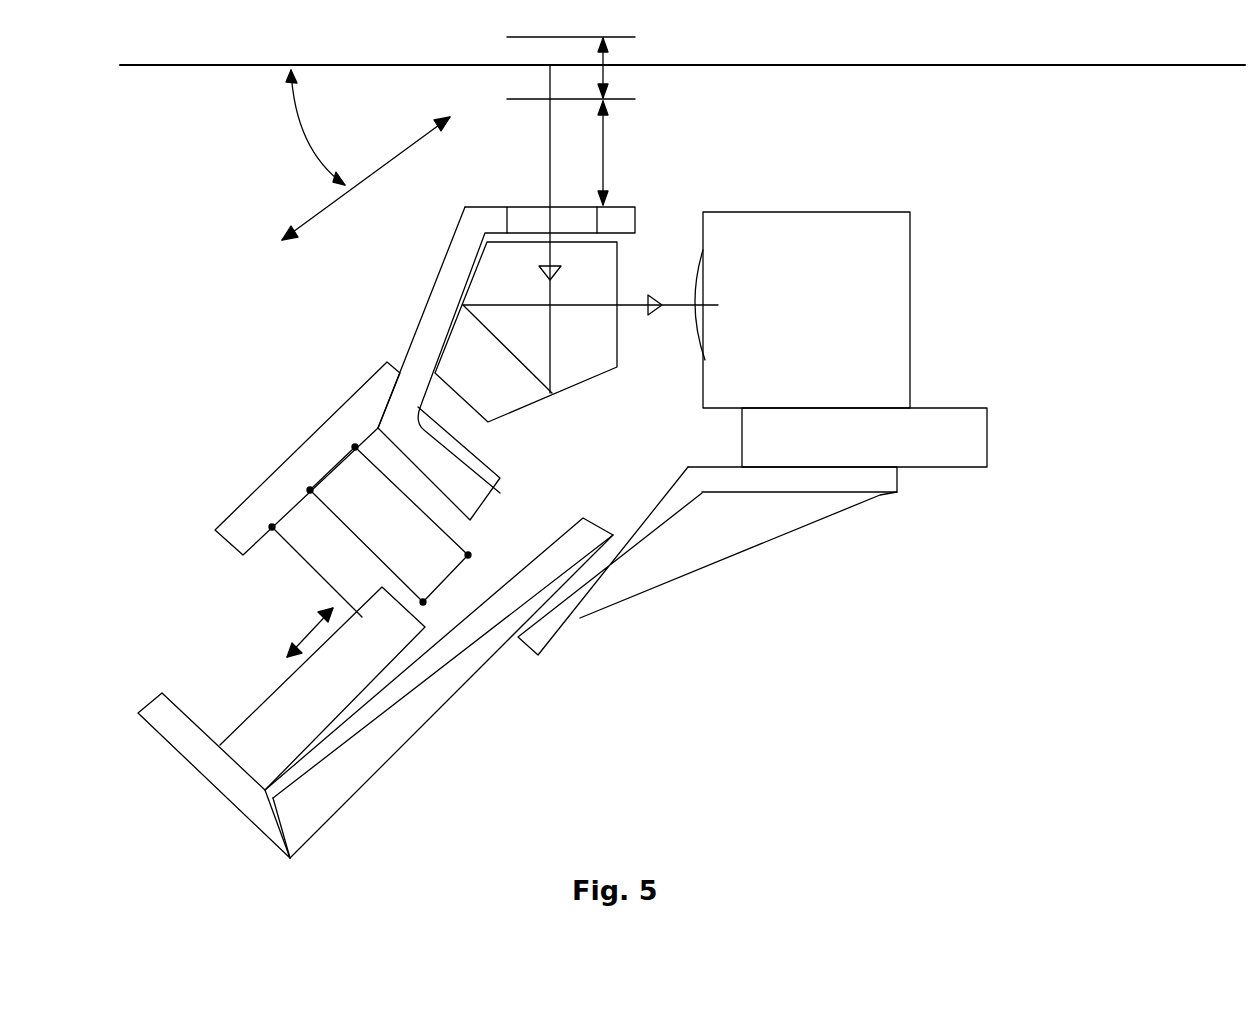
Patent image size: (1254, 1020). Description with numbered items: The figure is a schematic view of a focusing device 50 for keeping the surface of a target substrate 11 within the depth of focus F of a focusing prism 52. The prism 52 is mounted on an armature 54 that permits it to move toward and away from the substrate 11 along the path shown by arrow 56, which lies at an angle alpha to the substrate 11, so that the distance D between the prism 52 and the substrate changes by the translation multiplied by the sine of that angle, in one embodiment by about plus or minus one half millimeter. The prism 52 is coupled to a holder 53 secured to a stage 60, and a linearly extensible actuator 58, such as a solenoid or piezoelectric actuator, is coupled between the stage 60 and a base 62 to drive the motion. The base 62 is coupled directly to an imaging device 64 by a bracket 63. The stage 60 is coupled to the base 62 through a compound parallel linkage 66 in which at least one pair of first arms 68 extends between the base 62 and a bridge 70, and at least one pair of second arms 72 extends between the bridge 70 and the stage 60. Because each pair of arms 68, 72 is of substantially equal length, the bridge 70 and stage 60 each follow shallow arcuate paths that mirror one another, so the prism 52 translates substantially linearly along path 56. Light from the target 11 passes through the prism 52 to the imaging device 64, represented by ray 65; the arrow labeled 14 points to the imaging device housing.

The target substrate 11 is at (188, 66).
The camera housing 14 is at (913, 255).
The focusing device 50 is at (140, 566).
The focusing prism 52 is at (618, 268).
The holder 53 is at (430, 297).
The armature 54 is at (183, 757).
The arrow 56 is at (348, 188).
The linearly extensible actuator 58 is at (277, 687).
The stage 60 is at (462, 610).
The base 62 is at (427, 723).
The bracket 63 is at (770, 540).
The imaging device 64 is at (757, 212).
The ray 65 is at (678, 305).
The compound parallel linkage 66 is at (307, 590).
The first arms 68 is at (300, 558).
The bridge 70 is at (295, 450).
The second arms 72 is at (422, 513).
The depth of focus F is at (605, 67).
The distance D is at (603, 148).